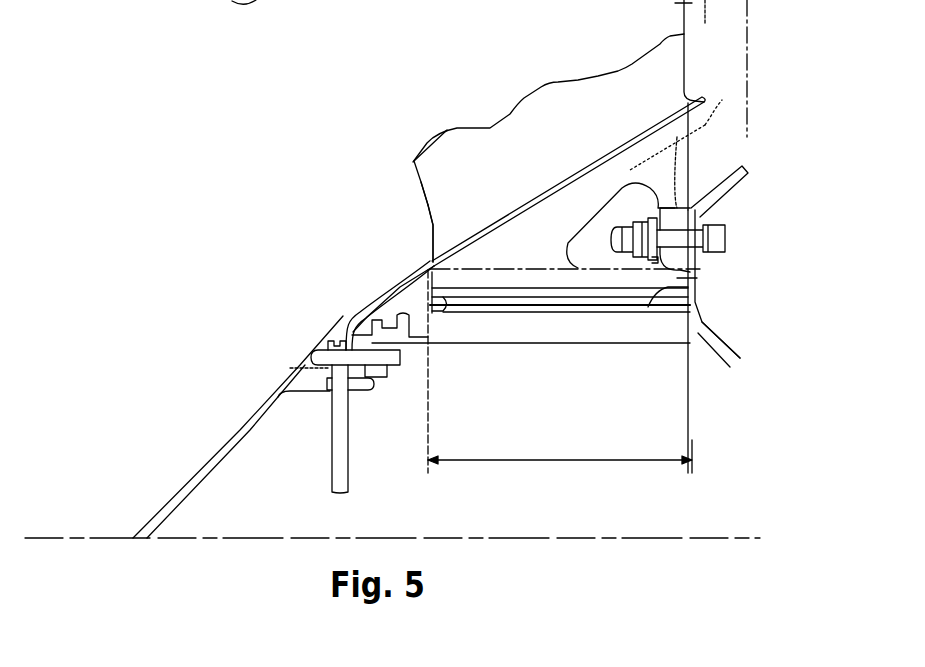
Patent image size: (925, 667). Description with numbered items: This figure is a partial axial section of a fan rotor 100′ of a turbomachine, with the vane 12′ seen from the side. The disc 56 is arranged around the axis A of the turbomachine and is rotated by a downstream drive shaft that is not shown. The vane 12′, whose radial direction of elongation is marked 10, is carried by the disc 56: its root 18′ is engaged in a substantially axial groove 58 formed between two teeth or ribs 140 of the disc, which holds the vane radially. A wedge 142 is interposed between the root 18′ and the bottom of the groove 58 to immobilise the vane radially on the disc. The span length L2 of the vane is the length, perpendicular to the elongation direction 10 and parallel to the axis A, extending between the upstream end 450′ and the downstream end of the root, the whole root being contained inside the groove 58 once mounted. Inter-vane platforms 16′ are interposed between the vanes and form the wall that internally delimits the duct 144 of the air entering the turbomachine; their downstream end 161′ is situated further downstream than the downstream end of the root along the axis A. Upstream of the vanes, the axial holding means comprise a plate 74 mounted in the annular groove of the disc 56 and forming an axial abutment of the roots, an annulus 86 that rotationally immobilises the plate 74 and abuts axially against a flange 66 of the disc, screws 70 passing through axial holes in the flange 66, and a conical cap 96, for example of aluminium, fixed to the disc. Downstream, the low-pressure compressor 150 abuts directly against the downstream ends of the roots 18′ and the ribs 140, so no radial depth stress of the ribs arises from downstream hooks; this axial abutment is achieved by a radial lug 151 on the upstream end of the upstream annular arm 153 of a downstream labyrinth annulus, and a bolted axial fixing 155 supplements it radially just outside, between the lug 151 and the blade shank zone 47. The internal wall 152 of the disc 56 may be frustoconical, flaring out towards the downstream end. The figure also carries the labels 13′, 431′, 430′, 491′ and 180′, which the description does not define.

The elongation direction 10 is at (749, 43).
The vane 12′ is at (509, 109).
The strut 13′ is at (449, 161).
The rib 431′ is at (420, 187).
The duct 144 is at (346, 177).
The wall 430′ is at (428, 245).
The inter-vane platform 16′ is at (637, 140).
The plate 74 is at (385, 293).
The annulus 86 is at (347, 327).
The screws 70 is at (310, 363).
The flange 66 is at (355, 393).
The upstream end of the vane root 450′ is at (428, 327).
The cap 96 is at (247, 427).
The teeth or ribs 140 is at (490, 270).
The root 18′ is at (539, 288).
The downstream end 161′ is at (702, 101).
The blade shank zone 47 is at (687, 131).
The boss wall 491′ is at (678, 207).
The low-pressure compressor 150 is at (731, 187).
The upstream annular arm 153 is at (752, 178).
The rotor 100′ is at (755, 166).
The axial fixing 155 is at (728, 236).
The plate 180′ is at (694, 280).
The wedge 142 is at (694, 293).
The radial lug 151 is at (705, 303).
The disc 56 is at (511, 345).
The groove 58 is at (598, 313).
The internal wall 152 is at (480, 347).
The span length L2 is at (560, 464).
The axis A is at (735, 538).